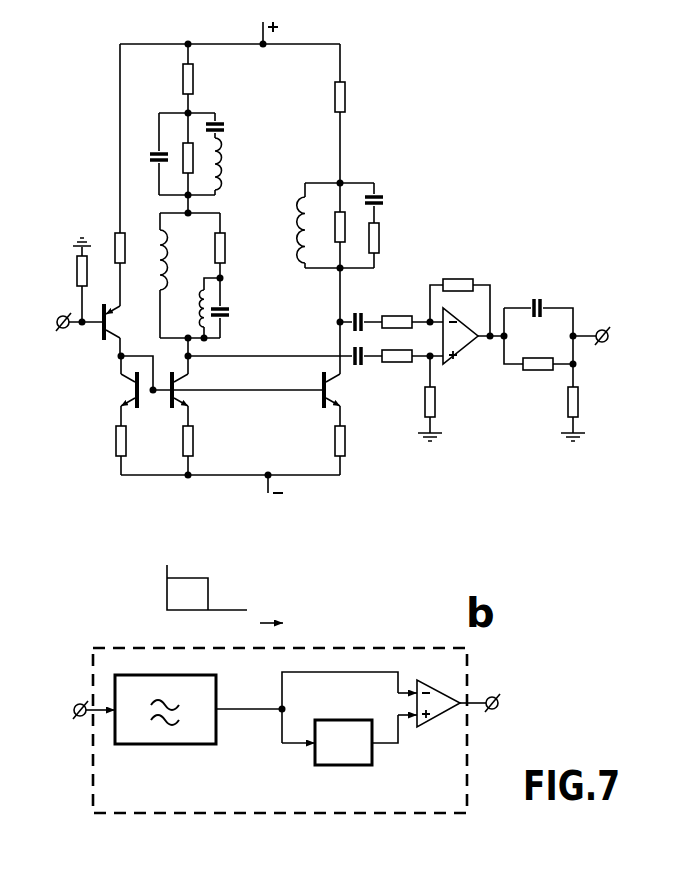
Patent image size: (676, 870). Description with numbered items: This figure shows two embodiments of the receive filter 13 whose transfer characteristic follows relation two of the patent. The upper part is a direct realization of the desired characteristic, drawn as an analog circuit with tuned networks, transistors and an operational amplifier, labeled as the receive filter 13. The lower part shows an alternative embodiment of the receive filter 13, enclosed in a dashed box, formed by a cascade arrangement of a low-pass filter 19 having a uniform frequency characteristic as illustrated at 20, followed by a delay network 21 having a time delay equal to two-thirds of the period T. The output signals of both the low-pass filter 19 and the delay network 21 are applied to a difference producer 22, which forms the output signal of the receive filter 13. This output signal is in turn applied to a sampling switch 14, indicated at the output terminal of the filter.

The receive filter 13 is at (294, 130).
The sampling switch 14 is at (500, 703).
The low-pass filter 19 is at (162, 744).
The frequency characteristic 20 is at (133, 670).
The delay network 21 is at (338, 766).
The difference producer 22 is at (442, 718).